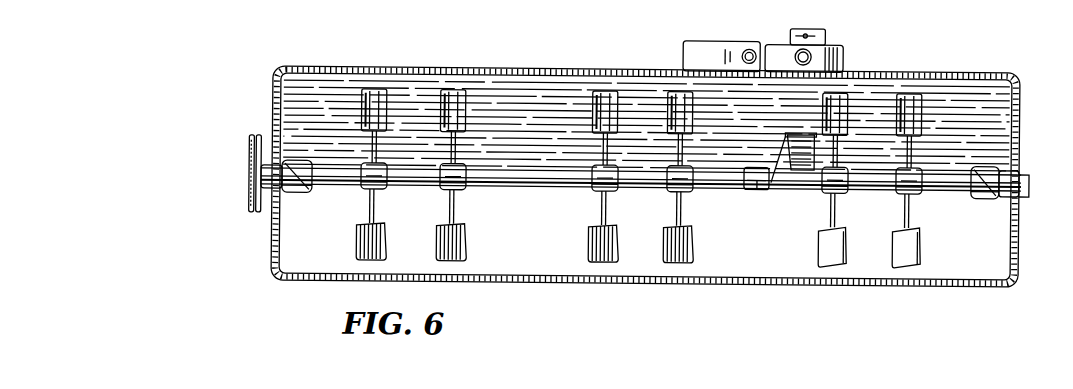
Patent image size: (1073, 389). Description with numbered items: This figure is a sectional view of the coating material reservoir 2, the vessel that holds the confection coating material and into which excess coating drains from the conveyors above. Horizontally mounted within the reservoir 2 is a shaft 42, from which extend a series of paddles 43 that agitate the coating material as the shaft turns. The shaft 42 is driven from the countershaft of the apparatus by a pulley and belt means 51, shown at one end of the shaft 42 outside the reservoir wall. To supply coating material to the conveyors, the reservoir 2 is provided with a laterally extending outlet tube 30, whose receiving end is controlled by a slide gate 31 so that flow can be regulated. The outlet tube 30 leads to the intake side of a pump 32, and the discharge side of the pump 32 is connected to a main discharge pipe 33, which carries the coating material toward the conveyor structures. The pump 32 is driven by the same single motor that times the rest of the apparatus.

The coating material reservoir 2 is at (545, 100).
The outlet tube 30 is at (803, 140).
The slide gate 31 is at (768, 178).
The pump 32 is at (795, 52).
The main discharge pipe 33 is at (811, 50).
The shaft 42 is at (484, 165).
The paddles 43 is at (387, 106).
The pulley and belt means 51 is at (255, 158).